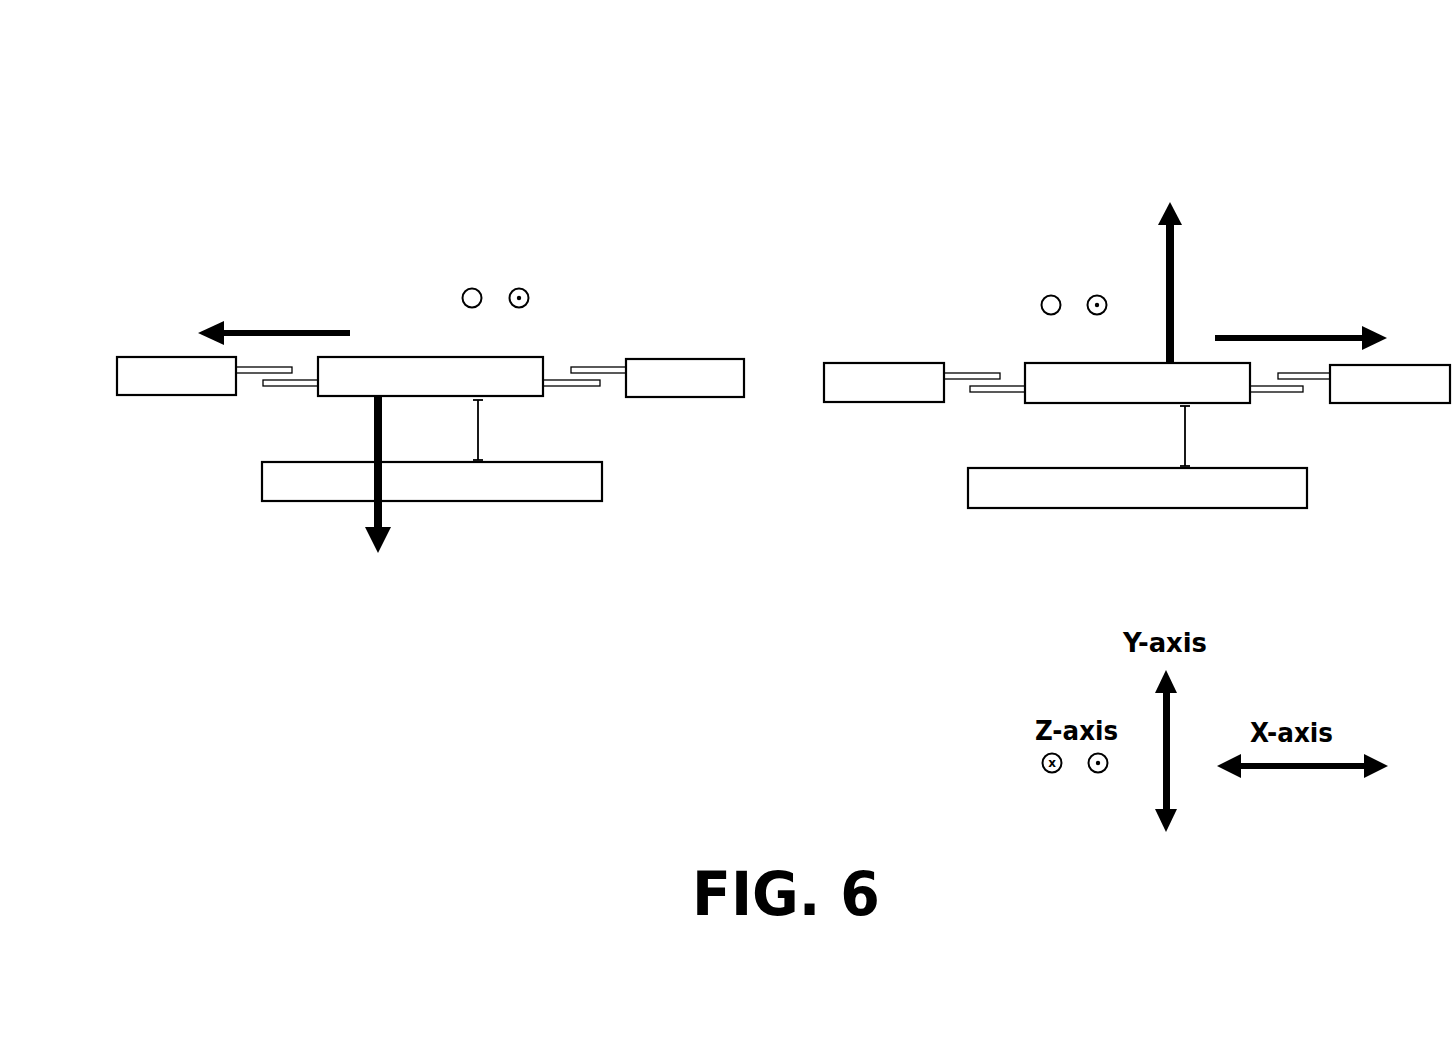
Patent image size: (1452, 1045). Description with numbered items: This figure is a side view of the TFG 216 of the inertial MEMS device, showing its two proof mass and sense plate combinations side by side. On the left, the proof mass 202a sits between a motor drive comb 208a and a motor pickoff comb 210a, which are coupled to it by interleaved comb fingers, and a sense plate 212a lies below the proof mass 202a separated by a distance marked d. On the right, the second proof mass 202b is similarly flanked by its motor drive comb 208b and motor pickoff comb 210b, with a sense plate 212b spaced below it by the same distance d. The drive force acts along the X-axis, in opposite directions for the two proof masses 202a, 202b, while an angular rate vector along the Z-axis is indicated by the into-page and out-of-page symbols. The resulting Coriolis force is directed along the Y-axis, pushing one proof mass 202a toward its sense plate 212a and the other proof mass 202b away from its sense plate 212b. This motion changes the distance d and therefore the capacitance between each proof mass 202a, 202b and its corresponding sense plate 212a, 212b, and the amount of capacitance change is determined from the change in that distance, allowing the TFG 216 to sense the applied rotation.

The TFG 216 is at (262, 84).
The motor drive comb 208a is at (176, 376).
The proof mass 202a is at (430, 376).
The motor pickoff comb 210a is at (685, 378).
The sense plate 212a is at (432, 481).
The motor drive comb 208b is at (884, 382).
The proof mass 202b is at (1137, 383).
The motor pickoff comb 210b is at (1390, 384).
The sense plate 212b is at (1137, 488).